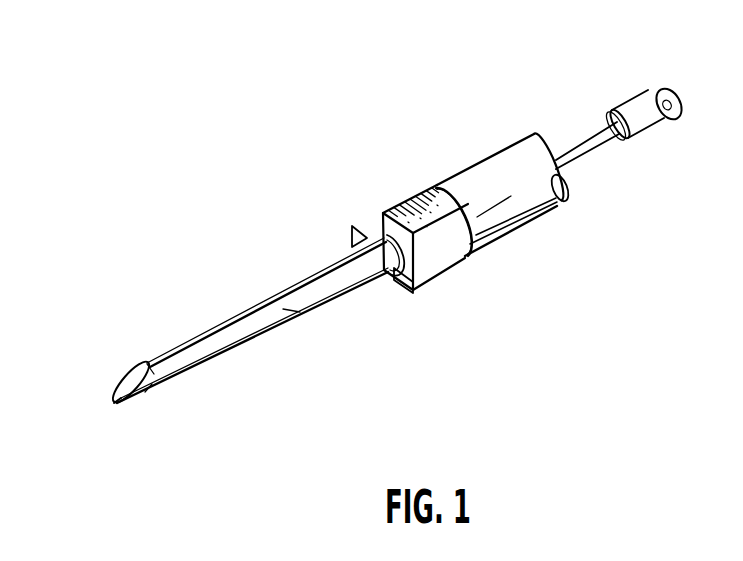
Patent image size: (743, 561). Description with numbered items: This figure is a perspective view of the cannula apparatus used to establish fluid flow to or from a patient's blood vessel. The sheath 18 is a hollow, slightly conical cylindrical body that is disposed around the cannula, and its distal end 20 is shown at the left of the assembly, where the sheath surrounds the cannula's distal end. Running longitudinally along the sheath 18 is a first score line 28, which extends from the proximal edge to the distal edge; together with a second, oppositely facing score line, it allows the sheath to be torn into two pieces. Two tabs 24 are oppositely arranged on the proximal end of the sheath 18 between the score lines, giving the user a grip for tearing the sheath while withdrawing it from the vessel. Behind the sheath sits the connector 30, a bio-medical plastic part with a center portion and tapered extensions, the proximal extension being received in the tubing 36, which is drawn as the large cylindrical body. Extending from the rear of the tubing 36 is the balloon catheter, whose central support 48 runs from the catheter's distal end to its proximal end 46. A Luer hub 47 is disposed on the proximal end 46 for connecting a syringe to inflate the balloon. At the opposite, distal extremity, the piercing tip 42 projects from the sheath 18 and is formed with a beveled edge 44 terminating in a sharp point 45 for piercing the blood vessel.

The sheath 18 is at (288, 322).
The distal end 20 is at (158, 385).
The tabs 24 is at (350, 233).
The first score line 28 is at (233, 316).
The connector 30 is at (415, 195).
The tubing 36 is at (521, 216).
The piercing tip 42 is at (147, 395).
The beveled edge 44 is at (128, 388).
The sharp point 45 is at (118, 399).
The proximal end 46 is at (633, 143).
The Luer hub 47 is at (652, 97).
The central support 48 is at (598, 143).